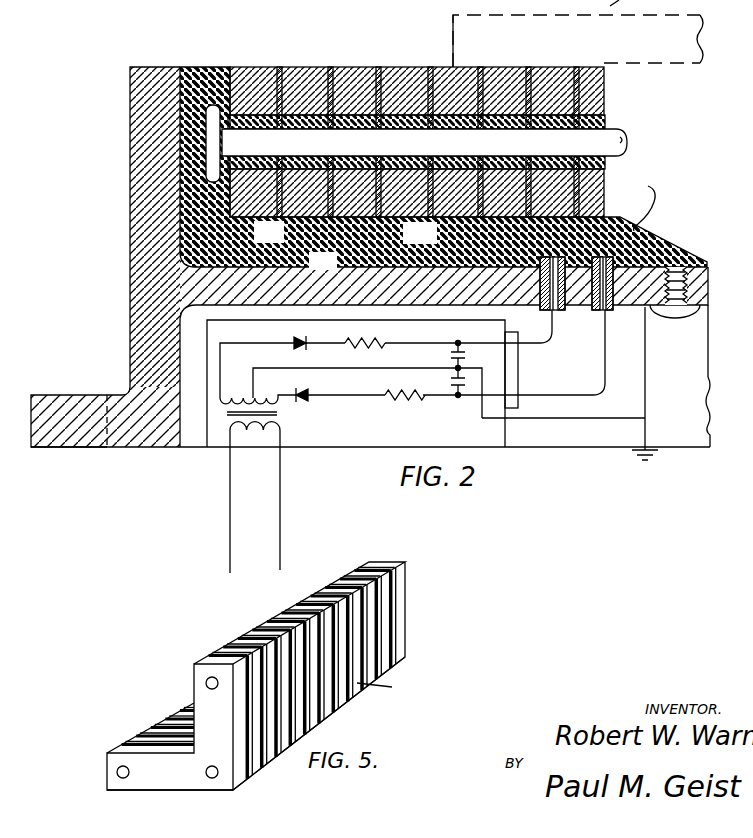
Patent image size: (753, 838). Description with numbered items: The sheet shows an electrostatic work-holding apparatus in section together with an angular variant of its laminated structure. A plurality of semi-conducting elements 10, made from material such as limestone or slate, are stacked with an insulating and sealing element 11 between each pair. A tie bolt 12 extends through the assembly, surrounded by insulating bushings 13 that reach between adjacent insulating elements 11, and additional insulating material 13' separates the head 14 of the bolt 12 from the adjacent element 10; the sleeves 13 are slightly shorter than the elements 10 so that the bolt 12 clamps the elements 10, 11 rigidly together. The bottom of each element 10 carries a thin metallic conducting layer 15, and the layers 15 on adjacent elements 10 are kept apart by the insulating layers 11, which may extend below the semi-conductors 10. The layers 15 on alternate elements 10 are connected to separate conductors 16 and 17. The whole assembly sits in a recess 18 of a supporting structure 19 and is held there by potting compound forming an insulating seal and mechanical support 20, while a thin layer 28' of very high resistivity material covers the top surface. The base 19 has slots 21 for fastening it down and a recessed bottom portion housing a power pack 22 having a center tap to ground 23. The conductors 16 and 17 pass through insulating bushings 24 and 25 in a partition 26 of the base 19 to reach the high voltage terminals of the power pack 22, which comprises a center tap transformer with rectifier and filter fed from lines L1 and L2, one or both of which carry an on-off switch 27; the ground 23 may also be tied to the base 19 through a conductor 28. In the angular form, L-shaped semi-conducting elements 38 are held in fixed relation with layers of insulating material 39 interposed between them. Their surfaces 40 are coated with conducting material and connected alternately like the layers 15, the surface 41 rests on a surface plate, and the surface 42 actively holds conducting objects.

In FIG. 2, the semi-conducting element 10 is at (262, 56).
In FIG. 2, the insulating and sealing element 11 is at (343, 56).
In FIG. 2, the tie bolt 12 is at (376, 145).
In FIG. 2, the insulating bushing 13 is at (416, 150).
In FIG. 2, the additional insulating material 13' is at (416, 134).
In FIG. 2, the head 14 is at (219, 140).
In FIG. 2, the conducting layer 15 is at (269, 233).
In FIG. 2, the conductor 16 is at (552, 334).
In FIG. 2, the conductor 17 is at (602, 376).
In FIG. 2, the recess 18 is at (203, 50).
In FIG. 2, the supporting structure 19 is at (138, 103).
In FIG. 2, the mechanical support 20 is at (637, 201).
In FIG. 2, the slot 21 is at (72, 398).
In FIG. 2, the power pack 22 is at (390, 422).
In FIG. 2, the center tap to ground 23 is at (605, 418).
In FIG. 2, the insulating bushing 24 is at (543, 310).
In FIG. 2, the insulating bushing 25 is at (602, 312).
In FIG. 2, the partition 26 is at (700, 291).
In FIG. 2, the on-off switch 27 is at (232, 520).
In FIG. 2, the conductor 28 is at (655, 383).
In FIG. 2, the thin layer of high-resistivity material 28' is at (578, 34).
In FIG. 2, the line L1 is at (218, 509).
In FIG. 2, the line L2 is at (269, 508).
In FIG. 5, the L-shaped semi-conducting element 38 is at (398, 614).
In FIG. 5, the insulating material layer 39 is at (332, 714).
In FIG. 5, the surface 40 is at (194, 685).
In FIG. 5, the surface 41 is at (168, 791).
In FIG. 5, the surface 42 is at (390, 692).